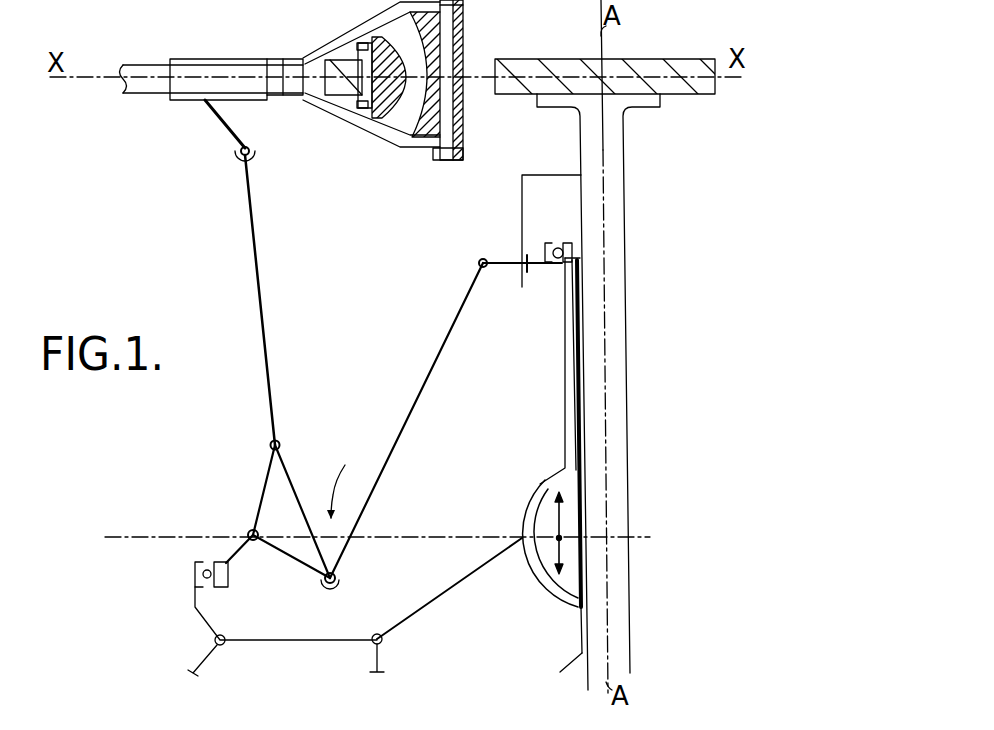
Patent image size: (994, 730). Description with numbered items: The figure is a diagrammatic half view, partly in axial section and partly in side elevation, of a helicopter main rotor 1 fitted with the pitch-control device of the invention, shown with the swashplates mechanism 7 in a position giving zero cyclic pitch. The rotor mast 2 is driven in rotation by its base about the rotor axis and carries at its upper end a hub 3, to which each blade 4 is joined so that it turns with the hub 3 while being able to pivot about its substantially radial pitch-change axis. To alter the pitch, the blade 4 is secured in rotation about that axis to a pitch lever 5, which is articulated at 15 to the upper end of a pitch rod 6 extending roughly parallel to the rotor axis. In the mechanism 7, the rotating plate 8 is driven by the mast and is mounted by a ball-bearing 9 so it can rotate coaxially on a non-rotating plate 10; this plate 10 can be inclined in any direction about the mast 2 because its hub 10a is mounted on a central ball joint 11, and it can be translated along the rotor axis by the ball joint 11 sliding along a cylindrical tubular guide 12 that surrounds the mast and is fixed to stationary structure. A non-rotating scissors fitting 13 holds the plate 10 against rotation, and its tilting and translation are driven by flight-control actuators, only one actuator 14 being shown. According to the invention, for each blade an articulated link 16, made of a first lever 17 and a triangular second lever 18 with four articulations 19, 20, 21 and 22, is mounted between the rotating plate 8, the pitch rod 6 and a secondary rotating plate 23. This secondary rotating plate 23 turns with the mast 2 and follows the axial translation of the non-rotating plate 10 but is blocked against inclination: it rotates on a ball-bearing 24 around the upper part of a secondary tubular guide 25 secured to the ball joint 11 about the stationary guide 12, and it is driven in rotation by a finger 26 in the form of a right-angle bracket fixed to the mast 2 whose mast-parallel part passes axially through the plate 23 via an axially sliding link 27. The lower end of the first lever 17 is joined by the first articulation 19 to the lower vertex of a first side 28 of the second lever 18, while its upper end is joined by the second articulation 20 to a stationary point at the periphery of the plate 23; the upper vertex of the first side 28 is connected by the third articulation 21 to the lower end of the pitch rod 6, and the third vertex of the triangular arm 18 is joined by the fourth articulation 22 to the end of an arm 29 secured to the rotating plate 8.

The helicopter main rotor 1 is at (196, 179).
The rotor mast 2 is at (583, 686).
The hub 3 is at (527, 63).
The blade 4 is at (150, 72).
The pitch lever 5 is at (224, 126).
The pitch rod 6 is at (256, 266).
The swashplates mechanism 7 is at (180, 612).
The rotating plate 8 is at (225, 560).
The ball-bearing 9 is at (195, 581).
The non-rotating plate 10 is at (430, 606).
The hub of non-rotating plate 10a is at (528, 500).
The central ball joint 11 is at (562, 520).
The cylindrical tubular guide 12 is at (565, 655).
The non-rotating scissors fitting 13 is at (212, 655).
The flight-control actuator 14 is at (386, 656).
The articulation of pitch rod to pitch lever 15 is at (249, 150).
The articulated link 16 is at (345, 477).
The first lever 17 is at (413, 402).
The second lever 18 is at (262, 498).
The first articulation 19 is at (340, 582).
The second articulation 20 is at (478, 263).
The third articulation 21 is at (270, 440).
The fourth articulation 22 is at (247, 528).
The secondary rotating plate 23 is at (498, 262).
The ball-bearing 24 is at (578, 258).
The secondary tubular guide 25 is at (565, 382).
The finger 26 is at (521, 195).
The axially sliding link 27 is at (519, 262).
The first side 28 is at (291, 482).
The arm 29 is at (264, 545).